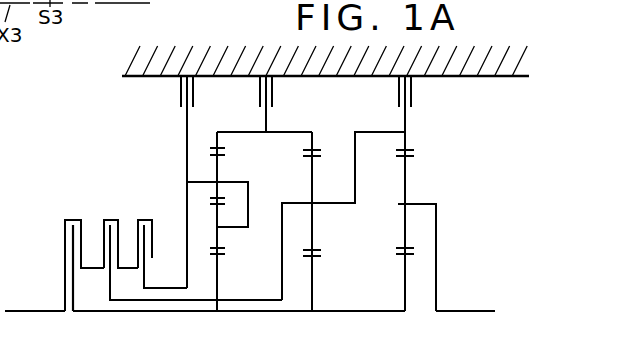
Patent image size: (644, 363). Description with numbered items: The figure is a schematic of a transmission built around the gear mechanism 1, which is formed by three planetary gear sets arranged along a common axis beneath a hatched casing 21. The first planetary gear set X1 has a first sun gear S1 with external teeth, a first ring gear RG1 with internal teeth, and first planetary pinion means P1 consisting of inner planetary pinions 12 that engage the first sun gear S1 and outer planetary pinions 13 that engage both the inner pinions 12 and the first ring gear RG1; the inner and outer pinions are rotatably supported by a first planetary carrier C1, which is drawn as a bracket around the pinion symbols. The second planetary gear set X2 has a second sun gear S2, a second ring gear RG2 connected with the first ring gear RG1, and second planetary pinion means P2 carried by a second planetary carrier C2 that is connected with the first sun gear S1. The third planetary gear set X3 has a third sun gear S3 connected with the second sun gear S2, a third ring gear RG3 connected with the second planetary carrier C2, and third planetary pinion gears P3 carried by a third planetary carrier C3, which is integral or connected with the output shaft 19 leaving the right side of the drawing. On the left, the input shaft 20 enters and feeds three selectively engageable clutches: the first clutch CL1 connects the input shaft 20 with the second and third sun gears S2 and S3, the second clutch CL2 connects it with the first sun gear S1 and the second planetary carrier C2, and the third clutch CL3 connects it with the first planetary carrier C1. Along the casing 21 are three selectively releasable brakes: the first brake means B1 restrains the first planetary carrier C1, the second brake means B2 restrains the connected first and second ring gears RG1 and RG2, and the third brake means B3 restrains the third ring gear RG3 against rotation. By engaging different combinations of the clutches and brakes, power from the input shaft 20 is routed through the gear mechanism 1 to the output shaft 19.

The gear mechanism 1 is at (158, 318).
The inner planetary pinions 12 is at (220, 242).
The outer planetary pinions 13 is at (220, 168).
The output shaft 19 is at (463, 309).
The input shaft 20 is at (45, 313).
The casing 21 is at (143, 76).
The first brake means B1 is at (193, 99).
The second brake means B2 is at (272, 99).
The third brake means B3 is at (411, 99).
The first planetary carrier C1 is at (236, 183).
The second planetary carrier C2 is at (330, 203).
The third planetary carrier C3 is at (417, 202).
The first clutch CL1 is at (71, 217).
The second clutch CL2 is at (117, 205).
The third clutch CL3 is at (145, 217).
The first planetary pinion means P1 is at (207, 198).
The second planetary pinion means P2 is at (315, 225).
The third planetary pinion gears P3 is at (408, 232).
The first ring gear RG1 is at (220, 140).
The second ring gear RG2 is at (313, 140).
The third ring gear RG3 is at (408, 135).
The first sun gear S1 is at (221, 282).
The second sun gear S2 is at (293, 318).
The third sun gear S3 is at (408, 288).
The first planetary gear set X1 is at (234, 242).
The second planetary gear set X2 is at (336, 228).
The third planetary gear set X3 is at (418, 214).